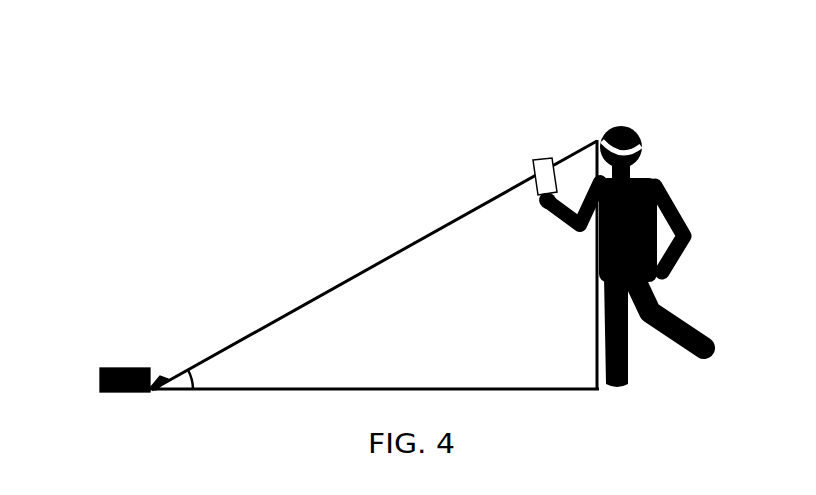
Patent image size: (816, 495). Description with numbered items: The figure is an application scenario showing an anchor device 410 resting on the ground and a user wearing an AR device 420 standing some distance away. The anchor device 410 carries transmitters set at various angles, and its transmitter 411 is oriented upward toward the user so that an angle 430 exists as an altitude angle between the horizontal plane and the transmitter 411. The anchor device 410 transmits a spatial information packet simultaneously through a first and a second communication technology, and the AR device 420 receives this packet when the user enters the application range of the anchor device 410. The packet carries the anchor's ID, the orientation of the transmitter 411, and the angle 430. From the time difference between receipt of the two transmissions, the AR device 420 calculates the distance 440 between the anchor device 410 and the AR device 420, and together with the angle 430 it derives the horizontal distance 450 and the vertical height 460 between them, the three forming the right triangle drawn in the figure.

The anchor device 410 is at (123, 368).
The transmitter 411 is at (160, 378).
The AR device 420 is at (627, 125).
The angle 430 is at (193, 380).
The distance 440 is at (374, 265).
The horizontal distance 450 is at (374, 374).
The vertical height 460 is at (571, 265).